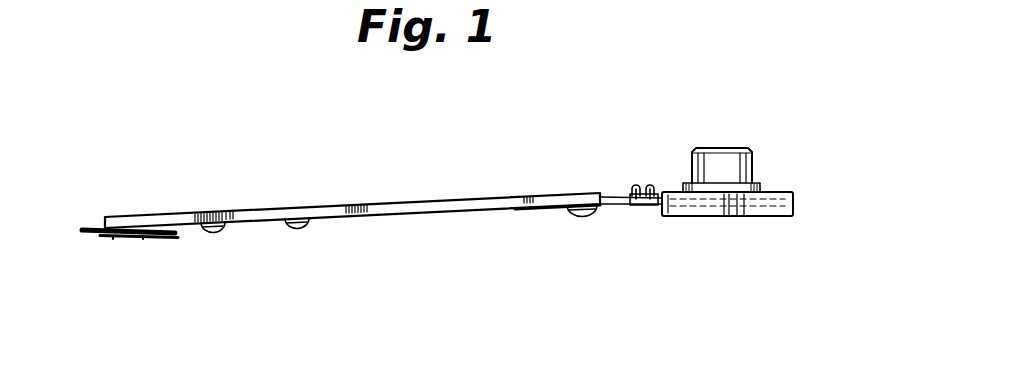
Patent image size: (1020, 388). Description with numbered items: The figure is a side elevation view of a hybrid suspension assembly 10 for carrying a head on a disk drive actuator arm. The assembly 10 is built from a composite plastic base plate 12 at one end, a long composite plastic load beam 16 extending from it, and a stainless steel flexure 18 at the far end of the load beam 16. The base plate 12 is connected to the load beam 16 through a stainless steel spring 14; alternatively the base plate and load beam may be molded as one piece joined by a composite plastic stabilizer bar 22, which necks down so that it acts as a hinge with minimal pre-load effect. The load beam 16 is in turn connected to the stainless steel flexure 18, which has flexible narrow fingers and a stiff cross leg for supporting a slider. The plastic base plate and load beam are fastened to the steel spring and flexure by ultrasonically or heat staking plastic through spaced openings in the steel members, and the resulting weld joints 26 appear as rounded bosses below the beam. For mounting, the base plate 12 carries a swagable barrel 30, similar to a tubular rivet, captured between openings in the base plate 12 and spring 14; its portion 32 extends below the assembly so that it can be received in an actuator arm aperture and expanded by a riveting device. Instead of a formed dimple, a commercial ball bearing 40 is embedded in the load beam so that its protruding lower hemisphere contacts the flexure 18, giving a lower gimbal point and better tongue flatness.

The hybrid suspension assembly 10 is at (450, 128).
The base plate 12 is at (712, 217).
The spring 14 is at (619, 226).
The load beam 16 is at (395, 192).
The flexure 18 is at (116, 252).
The stabilizer bar 22 is at (632, 186).
The weld joints 26 is at (290, 228).
The swagable barrel 30 is at (725, 135).
The portion of barrel 32 is at (692, 165).
The ball bearing 40 is at (146, 238).